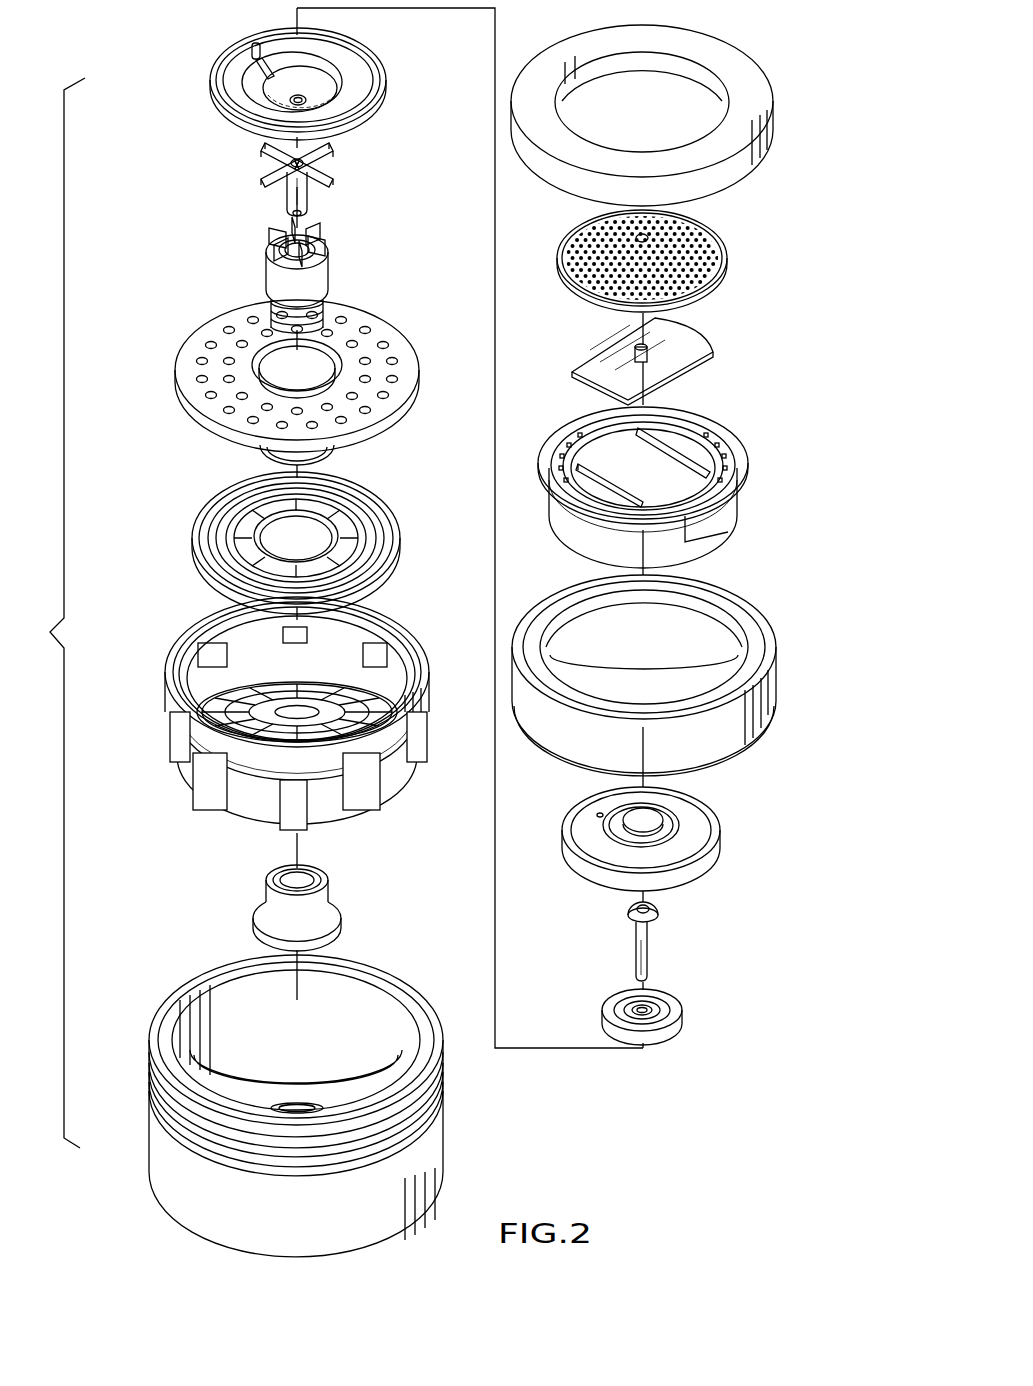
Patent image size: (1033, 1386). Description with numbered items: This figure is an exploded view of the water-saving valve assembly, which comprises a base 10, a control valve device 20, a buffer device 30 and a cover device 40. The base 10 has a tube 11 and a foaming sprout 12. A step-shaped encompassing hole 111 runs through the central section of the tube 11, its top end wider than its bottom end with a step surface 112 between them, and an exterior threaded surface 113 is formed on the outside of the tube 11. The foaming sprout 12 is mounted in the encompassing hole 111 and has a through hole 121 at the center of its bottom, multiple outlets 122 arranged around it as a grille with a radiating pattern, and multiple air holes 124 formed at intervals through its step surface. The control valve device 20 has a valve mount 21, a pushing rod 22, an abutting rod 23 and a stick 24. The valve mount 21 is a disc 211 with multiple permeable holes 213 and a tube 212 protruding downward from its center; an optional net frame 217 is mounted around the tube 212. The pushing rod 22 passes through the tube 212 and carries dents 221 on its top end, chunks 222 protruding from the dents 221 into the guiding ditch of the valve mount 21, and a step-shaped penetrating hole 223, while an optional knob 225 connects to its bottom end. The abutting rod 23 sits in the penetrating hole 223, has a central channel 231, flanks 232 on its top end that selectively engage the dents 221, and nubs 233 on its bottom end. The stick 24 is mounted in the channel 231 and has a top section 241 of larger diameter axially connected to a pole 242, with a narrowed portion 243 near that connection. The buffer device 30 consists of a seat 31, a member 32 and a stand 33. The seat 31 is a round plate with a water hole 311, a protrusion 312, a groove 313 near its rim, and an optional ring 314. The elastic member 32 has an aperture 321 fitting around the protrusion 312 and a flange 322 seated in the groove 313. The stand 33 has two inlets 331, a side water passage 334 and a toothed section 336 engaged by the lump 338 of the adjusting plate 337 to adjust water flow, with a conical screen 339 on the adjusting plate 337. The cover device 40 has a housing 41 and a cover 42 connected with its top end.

The base 10 is at (170, 950).
The tube 11 is at (440, 1147).
The encompassing hole 111 is at (347, 990).
The step surface 112 is at (353, 1060).
The exterior threaded surface 113 is at (165, 1097).
The foaming sprout 12 is at (340, 810).
The through hole 121 is at (300, 733).
The outlets 122 is at (240, 707).
The air holes 124 is at (243, 638).
The control valve device 20 is at (186, 214).
The valve mount 21 is at (178, 420).
The disc 211 is at (198, 378).
The tube 212 is at (313, 455).
The permeable holes 213 is at (211, 343).
The net frame 217 is at (195, 538).
The pushing rod 22 is at (313, 292).
The dents 221 is at (270, 253).
The chunks 222 is at (328, 265).
The penetrating hole 223 is at (310, 245).
The knob 225 is at (327, 910).
The abutting rod 23 is at (303, 200).
The channel 231 is at (307, 161).
The flanks 232 is at (280, 185).
The nubs 233 is at (295, 216).
The stick 24 is at (664, 943).
The top section 241 is at (657, 912).
The pole 242 is at (645, 967).
The screw neck 243 is at (632, 928).
The buffer device 30 is at (760, 826).
The seat 31 is at (362, 98).
The water hole 311 is at (287, 100).
The protrusion 312 is at (252, 50).
The groove 313 is at (370, 70).
The ring 314 is at (680, 1012).
The member 32 is at (695, 850).
The aperture 321 is at (600, 815).
The flange 322 is at (718, 825).
The stand 33 is at (742, 473).
The inlet 331 is at (667, 442).
The water passage 334 is at (718, 522).
The toothed section 336 is at (713, 447).
The adjusting plate 337 is at (690, 353).
The lump 338 is at (693, 328).
The conical screen 339 is at (700, 273).
The cover device 40 is at (775, 238).
The housing 41 is at (745, 725).
The cover 42 is at (753, 100).